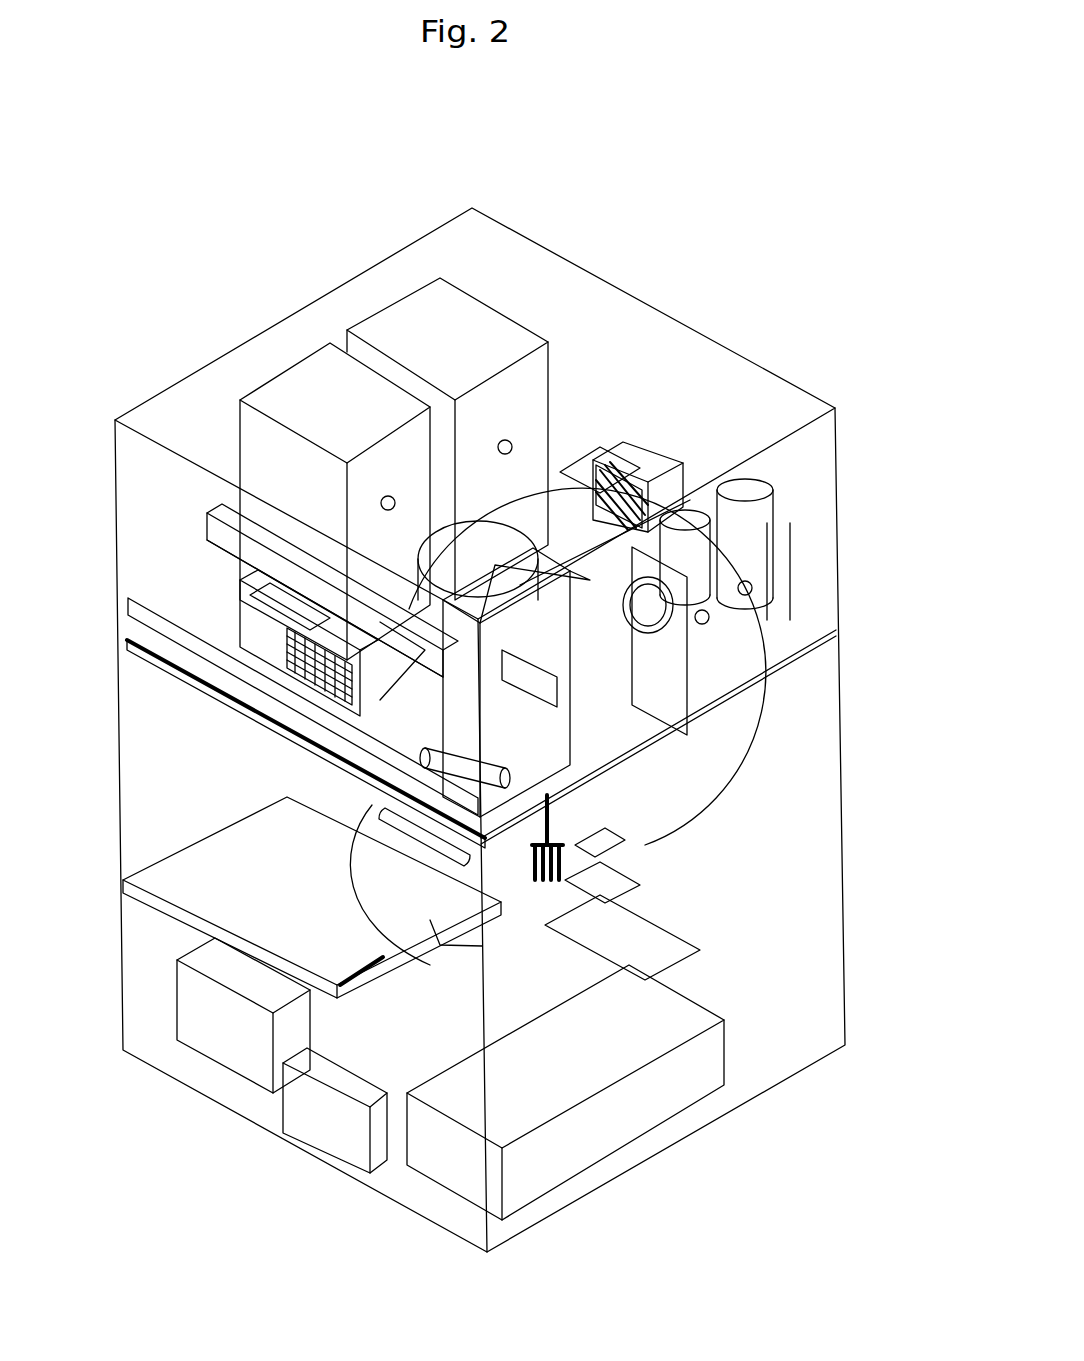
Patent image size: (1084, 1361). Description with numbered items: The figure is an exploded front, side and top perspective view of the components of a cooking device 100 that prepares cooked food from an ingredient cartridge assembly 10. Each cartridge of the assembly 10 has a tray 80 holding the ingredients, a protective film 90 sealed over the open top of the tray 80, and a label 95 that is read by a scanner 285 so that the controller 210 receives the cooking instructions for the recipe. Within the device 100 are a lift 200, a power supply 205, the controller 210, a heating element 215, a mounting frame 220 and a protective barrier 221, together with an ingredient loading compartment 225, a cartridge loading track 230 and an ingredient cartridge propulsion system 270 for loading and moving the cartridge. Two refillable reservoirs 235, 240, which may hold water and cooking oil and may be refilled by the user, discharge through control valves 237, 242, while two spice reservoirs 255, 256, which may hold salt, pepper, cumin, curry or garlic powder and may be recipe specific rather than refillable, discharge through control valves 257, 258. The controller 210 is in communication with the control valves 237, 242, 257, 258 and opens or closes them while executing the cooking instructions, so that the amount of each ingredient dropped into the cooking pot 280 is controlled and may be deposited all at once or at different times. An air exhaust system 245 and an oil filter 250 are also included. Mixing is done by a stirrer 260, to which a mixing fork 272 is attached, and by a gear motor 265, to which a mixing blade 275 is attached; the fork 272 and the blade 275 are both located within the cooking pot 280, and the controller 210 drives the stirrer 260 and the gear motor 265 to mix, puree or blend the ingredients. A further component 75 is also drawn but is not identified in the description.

The cooking device 100 is at (752, 172).
The ingredient cartridge assembly 10 is at (747, 802).
The support member 75 is at (273, 610).
The tray 80 is at (607, 680).
The protective film 90 is at (610, 775).
The label 95 is at (550, 686).
The lift 200 is at (327, 1122).
The power supply 205 is at (223, 1027).
The controller 210 is at (593, 1133).
The heating element 215 is at (263, 878).
The mounting frame 220 is at (187, 647).
The protective barrier 221 is at (193, 681).
The ingredient loading compartment 225 is at (303, 693).
The cartridge loading track 230 is at (207, 547).
The refillable reservoir 235 is at (330, 393).
The control valve 237 is at (384, 499).
The refillable reservoir 240 is at (443, 337).
The control valve 242 is at (499, 443).
The air exhaust system 245 is at (633, 453).
The oil filter 250 is at (630, 500).
The spice reservoir 255 is at (748, 523).
The spice reservoir 256 is at (693, 562).
The control valve 257 is at (752, 588).
The control valve 258 is at (708, 618).
The stirrer 260 is at (600, 590).
The gear motor 265 is at (507, 563).
The ingredient cartridge propulsion system 270 is at (567, 835).
The mixing fork 272 is at (565, 865).
The mixing blade 275 is at (560, 910).
The cooking pot 280 is at (508, 953).
The scanner 285 is at (292, 637).